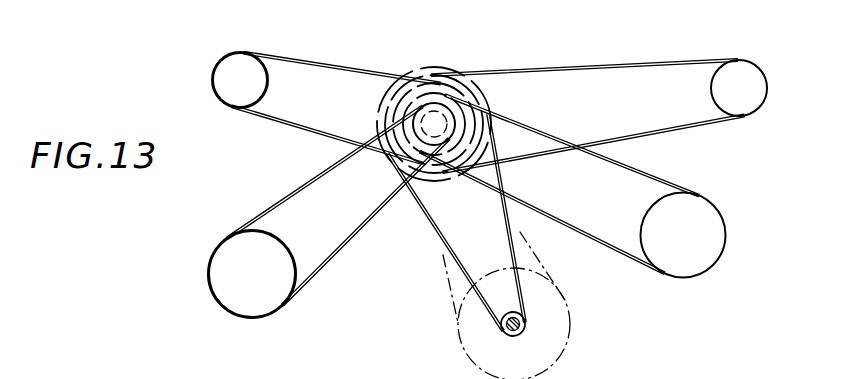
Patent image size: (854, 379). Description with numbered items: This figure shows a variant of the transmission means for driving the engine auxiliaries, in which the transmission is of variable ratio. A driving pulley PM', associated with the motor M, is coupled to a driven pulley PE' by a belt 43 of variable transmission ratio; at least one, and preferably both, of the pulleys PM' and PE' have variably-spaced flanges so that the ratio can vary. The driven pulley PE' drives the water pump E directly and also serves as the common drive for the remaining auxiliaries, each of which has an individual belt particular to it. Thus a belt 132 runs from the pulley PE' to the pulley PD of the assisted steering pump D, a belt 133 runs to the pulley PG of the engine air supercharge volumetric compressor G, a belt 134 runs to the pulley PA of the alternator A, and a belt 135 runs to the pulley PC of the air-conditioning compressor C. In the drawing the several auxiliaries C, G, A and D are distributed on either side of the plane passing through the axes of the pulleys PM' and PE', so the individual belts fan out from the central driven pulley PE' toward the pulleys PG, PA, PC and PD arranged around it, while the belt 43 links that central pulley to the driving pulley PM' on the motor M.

The water pump E is at (412, 62).
The driven pulley PE' is at (444, 90).
The engine air supercharge volumetric compressor G is at (246, 50).
The pulley of the engine air supercharge volumetric compressor PG is at (258, 80).
The alternator A is at (750, 58).
The pulley of the alternator PA is at (713, 88).
The air-conditioning compressor C is at (275, 320).
The pulley of the air-conditioning compressor PC is at (285, 255).
The assisted steering pump D is at (710, 280).
The pulley of the assisted steering pump PD is at (652, 218).
The motor M is at (527, 325).
The driving pulley PM' is at (461, 336).
The belt 133 is at (333, 62).
The belt 134 is at (580, 68).
The belt 132 is at (650, 176).
The belt 135 is at (300, 193).
The belt of variable transmission ratio 43 is at (430, 232).